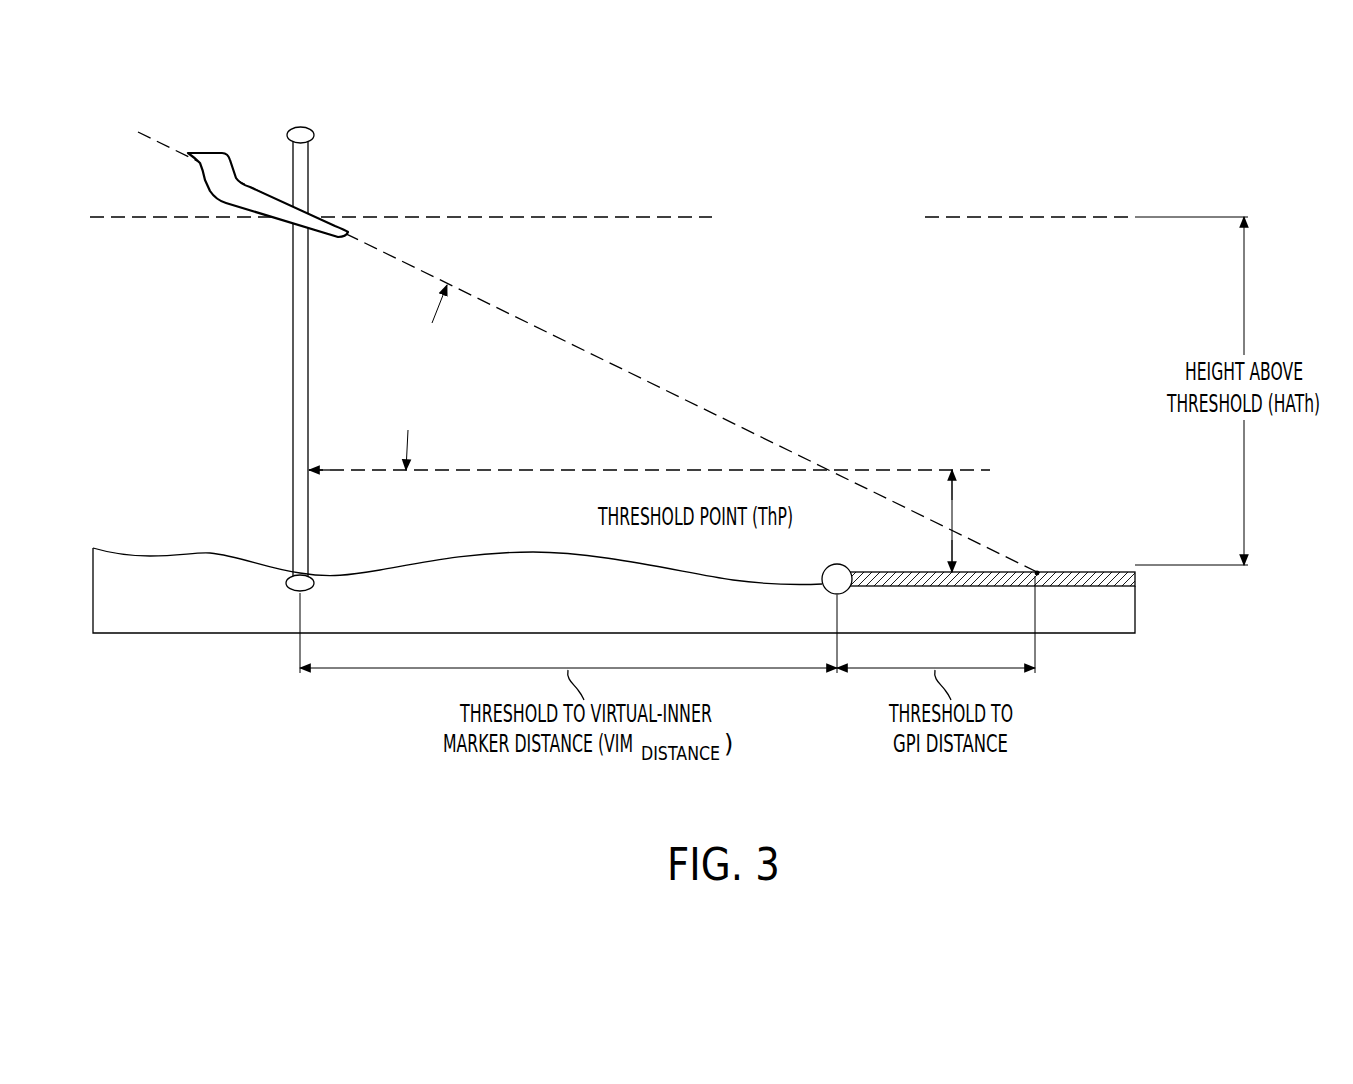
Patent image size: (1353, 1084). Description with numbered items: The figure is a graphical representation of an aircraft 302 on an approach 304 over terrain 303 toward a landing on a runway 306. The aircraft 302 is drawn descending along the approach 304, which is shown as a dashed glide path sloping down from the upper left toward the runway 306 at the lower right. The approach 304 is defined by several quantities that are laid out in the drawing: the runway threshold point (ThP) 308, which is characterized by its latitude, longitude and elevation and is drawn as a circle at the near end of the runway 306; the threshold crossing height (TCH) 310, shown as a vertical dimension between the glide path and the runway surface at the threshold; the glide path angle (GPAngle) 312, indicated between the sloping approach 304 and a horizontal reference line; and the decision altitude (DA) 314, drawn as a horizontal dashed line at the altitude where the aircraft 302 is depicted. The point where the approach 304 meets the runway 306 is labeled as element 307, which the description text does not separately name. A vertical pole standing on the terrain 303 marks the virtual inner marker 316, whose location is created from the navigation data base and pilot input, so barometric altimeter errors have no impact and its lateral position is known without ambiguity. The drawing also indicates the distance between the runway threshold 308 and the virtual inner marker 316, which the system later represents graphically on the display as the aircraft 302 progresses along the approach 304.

The aircraft 302 is at (328, 210).
The terrain 303 is at (413, 567).
The approach 304 is at (625, 370).
The runway 306 is at (870, 572).
The glidepath intercept point (GPI) 307 is at (1037, 575).
The runway threshold point (ThP) 308 is at (822, 572).
The threshold crossing height (TCH) 310 is at (952, 503).
The glide path angle (GPAngle) 312 is at (432, 324).
The decision altitude (DA) 314 is at (535, 217).
The virtual inner marker 316 is at (293, 500).